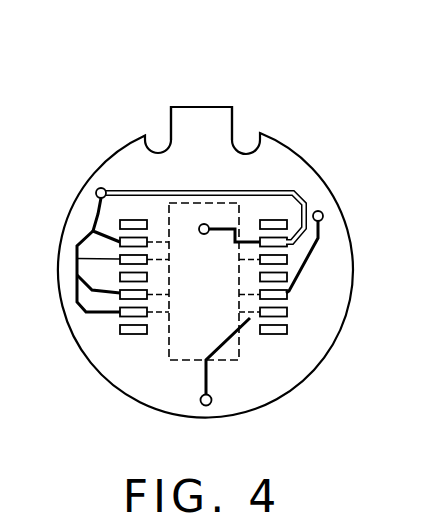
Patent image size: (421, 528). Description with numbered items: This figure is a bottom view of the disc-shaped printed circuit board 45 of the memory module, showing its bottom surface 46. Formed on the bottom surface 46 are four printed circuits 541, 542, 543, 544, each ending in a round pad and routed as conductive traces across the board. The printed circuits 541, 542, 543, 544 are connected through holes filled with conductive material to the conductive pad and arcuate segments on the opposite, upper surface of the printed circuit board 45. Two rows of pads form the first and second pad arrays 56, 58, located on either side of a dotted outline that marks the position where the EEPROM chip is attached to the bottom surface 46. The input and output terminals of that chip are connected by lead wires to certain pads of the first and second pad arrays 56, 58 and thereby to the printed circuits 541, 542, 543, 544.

The printed circuit board 45 is at (282, 128).
The bottom surface 46 is at (203, 107).
The printed circuit 541 is at (203, 224).
The printed circuit 542 is at (208, 383).
The printed circuit 543 is at (323, 218).
The printed circuit 544 is at (96, 208).
The first pad array 56 is at (132, 345).
The second pad array 58 is at (277, 345).